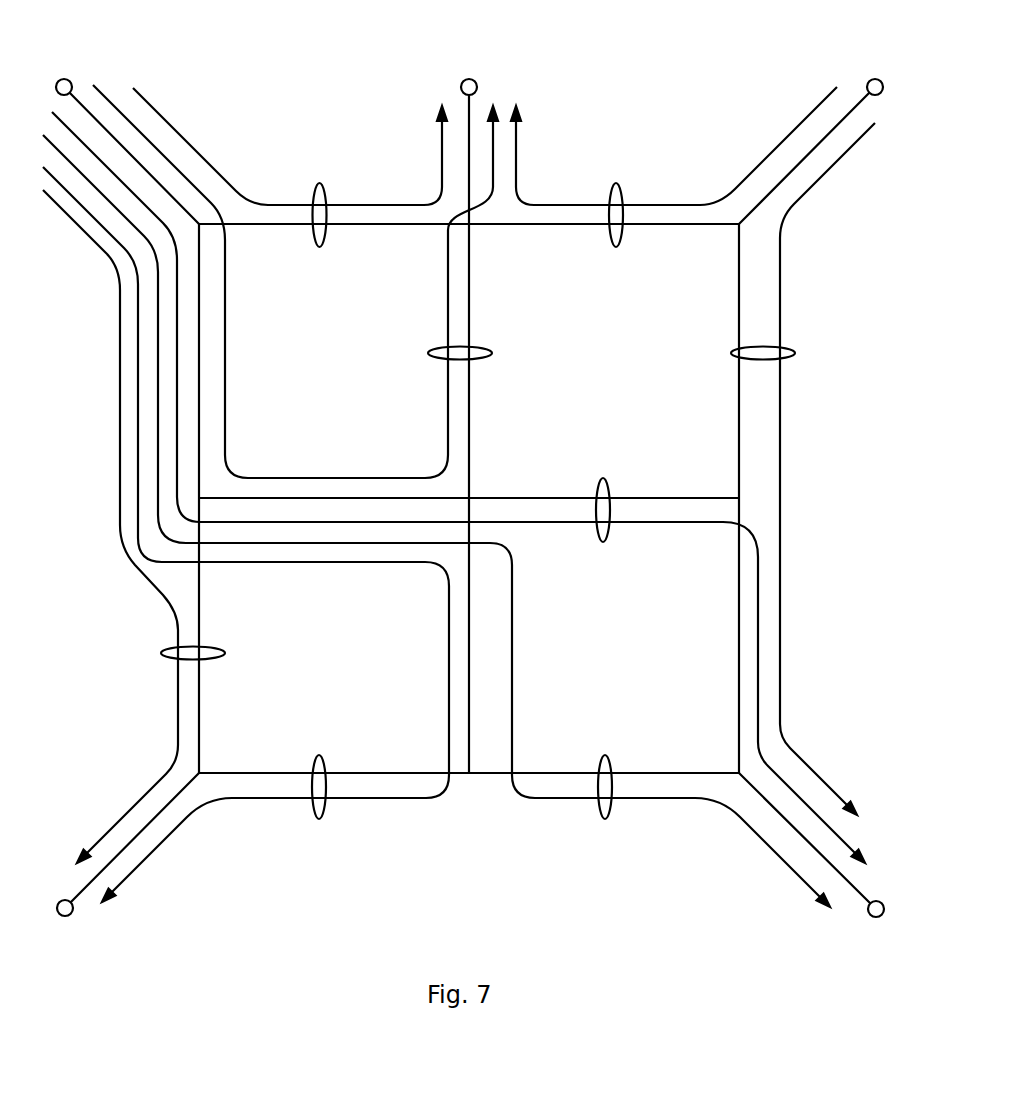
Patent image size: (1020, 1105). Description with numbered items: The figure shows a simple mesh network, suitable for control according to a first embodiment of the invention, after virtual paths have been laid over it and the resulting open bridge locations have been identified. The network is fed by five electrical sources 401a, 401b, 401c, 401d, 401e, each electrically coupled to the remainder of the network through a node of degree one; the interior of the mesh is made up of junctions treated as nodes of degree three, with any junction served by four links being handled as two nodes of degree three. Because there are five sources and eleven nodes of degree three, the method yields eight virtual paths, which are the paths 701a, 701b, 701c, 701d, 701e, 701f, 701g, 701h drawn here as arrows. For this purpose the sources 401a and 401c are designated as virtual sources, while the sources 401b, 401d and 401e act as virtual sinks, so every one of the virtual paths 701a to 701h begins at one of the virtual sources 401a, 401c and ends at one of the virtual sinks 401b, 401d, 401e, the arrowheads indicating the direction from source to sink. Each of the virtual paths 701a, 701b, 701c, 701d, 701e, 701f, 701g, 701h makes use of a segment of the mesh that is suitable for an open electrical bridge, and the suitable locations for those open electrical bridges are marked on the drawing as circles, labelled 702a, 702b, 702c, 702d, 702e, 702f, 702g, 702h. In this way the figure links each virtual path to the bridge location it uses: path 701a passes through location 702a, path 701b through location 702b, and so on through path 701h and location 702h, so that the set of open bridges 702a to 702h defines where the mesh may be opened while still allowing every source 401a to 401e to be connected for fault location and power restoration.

The source 401a is at (72, 84).
The source 401b is at (476, 82).
The source 401c is at (867, 82).
The source 401d is at (872, 917).
The source 401e is at (70, 916).
The virtual path 701a is at (206, 148).
The virtual path 701b is at (750, 160).
The virtual path 701c is at (826, 180).
The virtual path 701d is at (228, 354).
The virtual path 701e is at (784, 636).
The virtual path 701f is at (776, 856).
The virtual path 701g is at (370, 802).
The virtual path 701h is at (120, 510).
The open electrical bridge location 702a is at (322, 182).
The open electrical bridge location 702b is at (616, 182).
The open electrical bridge location 702c is at (797, 353).
The open electrical bridge location 702d is at (494, 353).
The open electrical bridge location 702e is at (604, 477).
The open electrical bridge location 702f is at (606, 754).
The open electrical bridge location 702g is at (320, 754).
The open electrical bridge location 702h is at (227, 653).